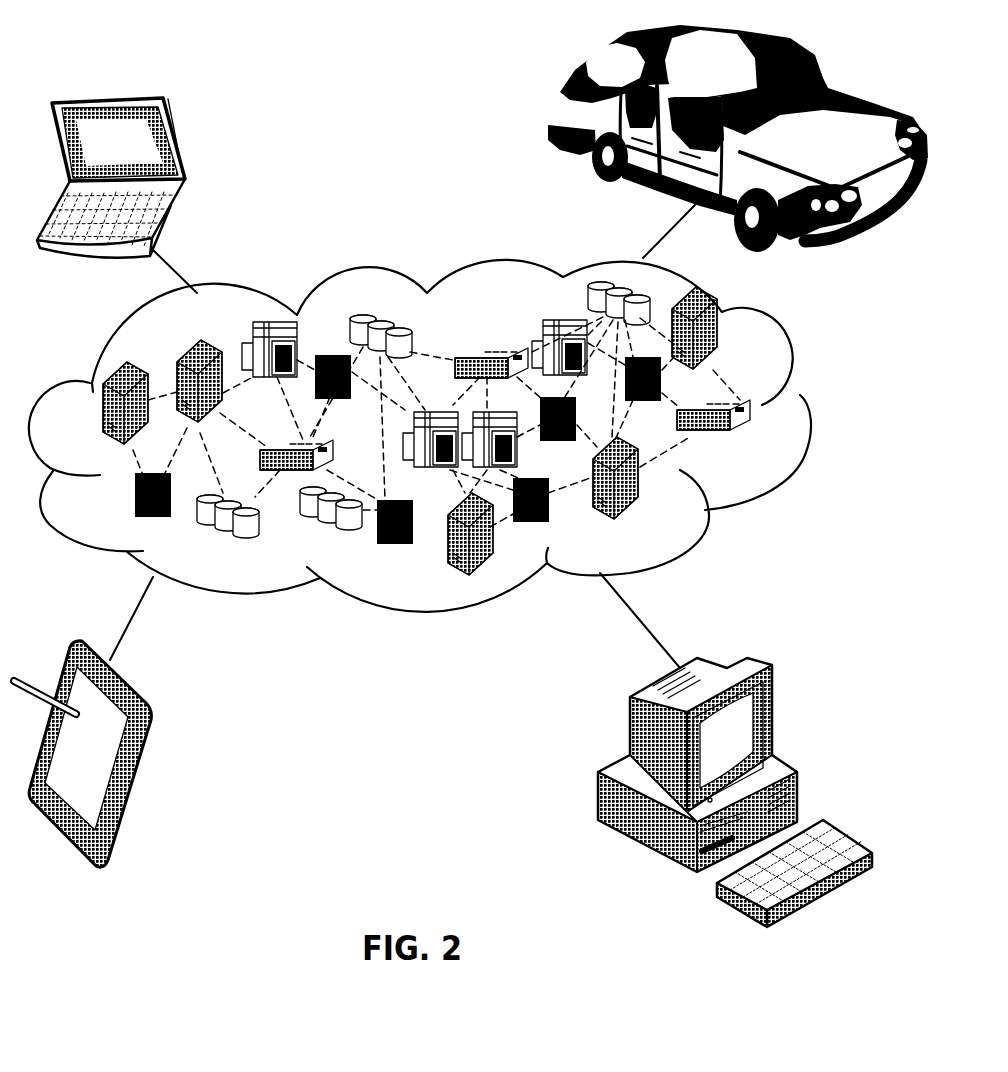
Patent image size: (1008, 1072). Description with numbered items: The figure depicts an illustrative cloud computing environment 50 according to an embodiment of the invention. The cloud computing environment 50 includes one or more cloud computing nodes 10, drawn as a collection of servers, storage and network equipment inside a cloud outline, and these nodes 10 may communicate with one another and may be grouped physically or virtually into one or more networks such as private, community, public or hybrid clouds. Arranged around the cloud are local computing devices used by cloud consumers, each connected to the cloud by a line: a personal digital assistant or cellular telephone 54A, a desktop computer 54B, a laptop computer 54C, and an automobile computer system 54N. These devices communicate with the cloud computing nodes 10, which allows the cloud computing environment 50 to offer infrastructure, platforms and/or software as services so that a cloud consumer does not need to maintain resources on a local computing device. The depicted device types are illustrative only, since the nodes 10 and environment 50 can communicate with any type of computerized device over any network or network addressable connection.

The cloud computing nodes 10 is at (757, 443).
The cloud computing environment 50 is at (810, 413).
The personal digital assistant (PDA) or cellular telephone 54A is at (147, 743).
The desktop computer 54B is at (741, 654).
The laptop computer 54C is at (182, 143).
The automobile computer system 54N is at (560, 112).